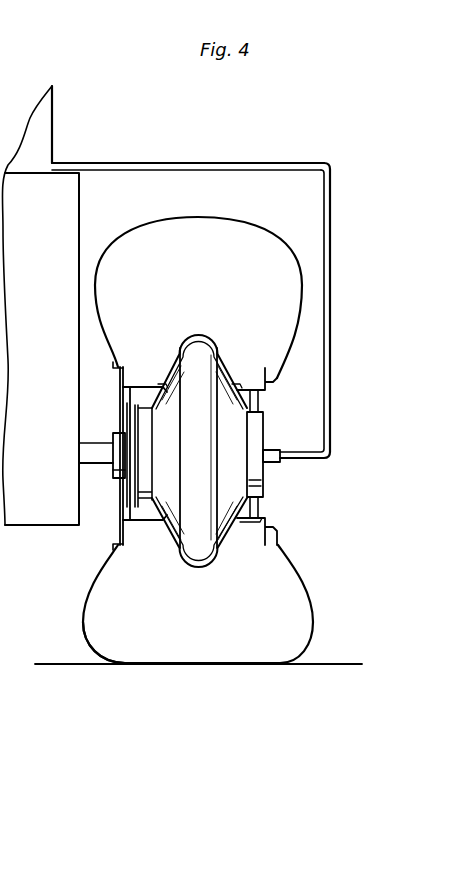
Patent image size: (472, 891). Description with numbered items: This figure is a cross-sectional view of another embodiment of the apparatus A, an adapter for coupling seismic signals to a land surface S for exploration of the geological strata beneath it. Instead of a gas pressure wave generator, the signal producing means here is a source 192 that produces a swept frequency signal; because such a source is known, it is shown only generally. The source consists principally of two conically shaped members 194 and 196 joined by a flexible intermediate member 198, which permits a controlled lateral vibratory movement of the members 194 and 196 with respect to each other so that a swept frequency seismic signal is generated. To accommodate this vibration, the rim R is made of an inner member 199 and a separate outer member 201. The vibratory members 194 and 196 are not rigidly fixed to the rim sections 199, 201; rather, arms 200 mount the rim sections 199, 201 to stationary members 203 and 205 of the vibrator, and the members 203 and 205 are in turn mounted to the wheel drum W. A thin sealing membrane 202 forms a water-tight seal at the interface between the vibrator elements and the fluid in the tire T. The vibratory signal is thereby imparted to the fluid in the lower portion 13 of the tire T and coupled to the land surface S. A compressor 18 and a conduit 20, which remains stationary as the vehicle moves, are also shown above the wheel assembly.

The compressor 18 is at (43, 118).
The conduit 20 is at (163, 163).
The apparatus A is at (334, 162).
The tire T is at (167, 218).
The lower portion of tire 13 is at (105, 622).
The wheel drum W is at (145, 463).
The rim R is at (280, 537).
The land surface S is at (320, 663).
The sealing membrane 202 is at (218, 343).
The flexible intermediate member 198 is at (198, 573).
The conically shaped member 196 is at (165, 387).
The conically shaped member 194 is at (228, 380).
The stationary member 203 is at (120, 455).
The source 192 is at (278, 474).
The arms 200 is at (258, 396).
The stationary member 205 is at (255, 437).
The outer member of rim 201 is at (263, 522).
The inner member of rim 199 is at (148, 522).